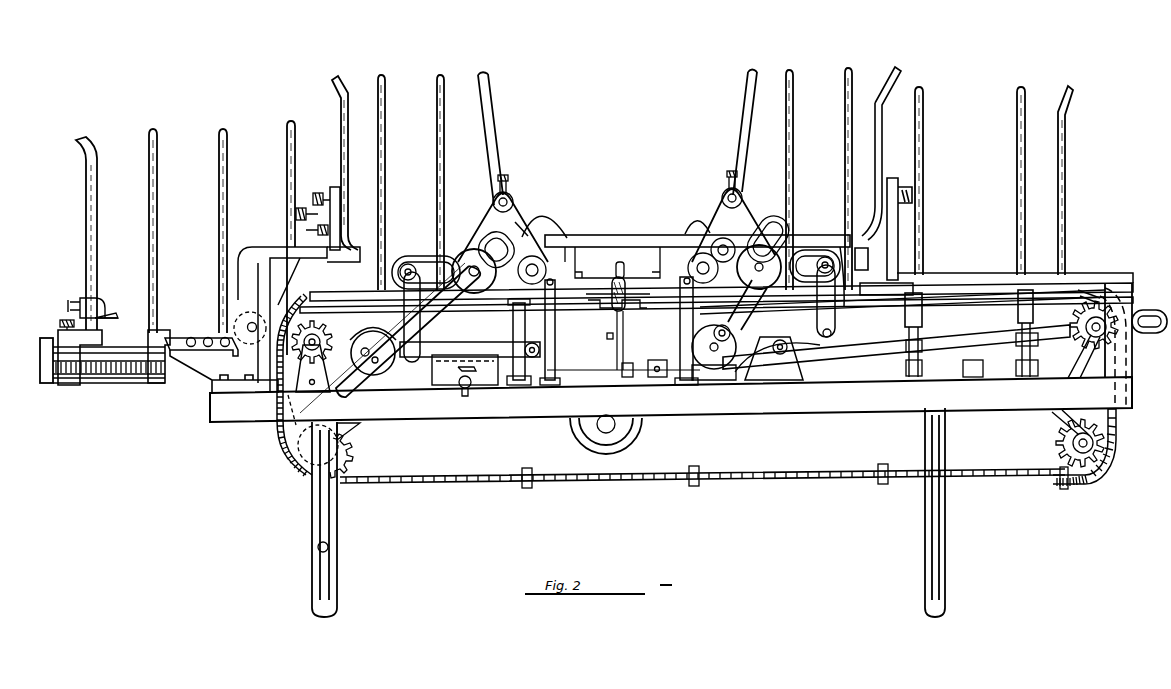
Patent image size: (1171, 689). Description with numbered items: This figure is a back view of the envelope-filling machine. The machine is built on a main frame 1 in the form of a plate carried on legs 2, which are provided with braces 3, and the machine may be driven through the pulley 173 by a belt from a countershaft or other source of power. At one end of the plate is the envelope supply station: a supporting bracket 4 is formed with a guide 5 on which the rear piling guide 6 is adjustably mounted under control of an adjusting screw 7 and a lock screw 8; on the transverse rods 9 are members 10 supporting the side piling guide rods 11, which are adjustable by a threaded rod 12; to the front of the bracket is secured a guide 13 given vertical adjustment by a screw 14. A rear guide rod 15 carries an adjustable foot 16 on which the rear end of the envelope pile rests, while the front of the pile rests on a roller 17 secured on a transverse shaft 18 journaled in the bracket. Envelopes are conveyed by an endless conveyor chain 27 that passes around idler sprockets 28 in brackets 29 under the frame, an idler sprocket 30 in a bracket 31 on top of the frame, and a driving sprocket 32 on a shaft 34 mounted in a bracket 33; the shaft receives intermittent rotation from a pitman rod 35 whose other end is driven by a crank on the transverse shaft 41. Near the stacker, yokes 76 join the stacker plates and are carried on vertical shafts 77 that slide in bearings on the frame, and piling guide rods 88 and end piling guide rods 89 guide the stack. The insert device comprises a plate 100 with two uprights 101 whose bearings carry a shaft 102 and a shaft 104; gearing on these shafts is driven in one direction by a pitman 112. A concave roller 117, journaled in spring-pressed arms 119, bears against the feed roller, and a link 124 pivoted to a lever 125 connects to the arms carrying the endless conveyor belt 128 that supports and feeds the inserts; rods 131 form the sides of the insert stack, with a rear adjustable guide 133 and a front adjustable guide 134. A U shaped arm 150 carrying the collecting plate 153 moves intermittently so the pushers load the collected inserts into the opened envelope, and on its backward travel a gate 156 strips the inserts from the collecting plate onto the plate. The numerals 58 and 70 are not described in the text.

The main frame 1 is at (212, 412).
The legs 2 is at (318, 515).
The braces 3 is at (318, 547).
The supporting bracket 4 is at (193, 364).
The guide 5 is at (118, 350).
The rear piling guide 6 is at (75, 383).
The adjusting screw 7 is at (121, 362).
The lock screw 8 is at (60, 322).
The transverse rods 9 is at (191, 336).
The members 10 is at (166, 334).
The side piling guide rods 11 is at (220, 207).
The threaded rod 12 is at (208, 336).
The guide 13 is at (292, 172).
The screw 14 is at (294, 210).
The rear guide rod 15 is at (86, 185).
The adjustable foot 16 is at (112, 313).
The roller 17 is at (252, 312).
The transverse shaft 18 is at (251, 333).
The conveyor chain 27 is at (745, 475).
The idler sprockets 28 is at (1066, 445).
The brackets 29 is at (1060, 416).
The idler sprocket 30 is at (312, 340).
The bracket 31 is at (313, 368).
The driving sprocket 32 is at (1091, 305).
The bracket 33 is at (1084, 356).
The shaft 34 is at (1103, 303).
The pitman rod 35 is at (964, 345).
The transverse shaft 41 is at (715, 352).
The left chain 58 is at (300, 412).
The valve knob 70 is at (467, 399).
The yokes 76 is at (912, 312).
The vertical shafts 77 is at (912, 330).
The piling guide rods 88 is at (1016, 129).
The end piling guide rods 89 is at (1066, 172).
The plate 100 is at (578, 295).
The uprights 101 is at (492, 215).
The shaft 102 is at (700, 262).
The shaft 104 is at (760, 263).
The pitman 112 is at (447, 329).
The concave roller 117 is at (696, 203).
The arms 119 is at (520, 220).
The link 124 is at (410, 313).
The lever 125 is at (477, 349).
The endless conveyor belt 128 is at (428, 260).
The rods 131 is at (438, 123).
The rear adjustable guide 133 is at (342, 108).
The front adjustable guide 134 is at (489, 98).
The U shaped arm 150 is at (612, 306).
The collecting plate 153 is at (616, 277).
The gate 156 is at (606, 236).
The pulley 173 is at (587, 430).